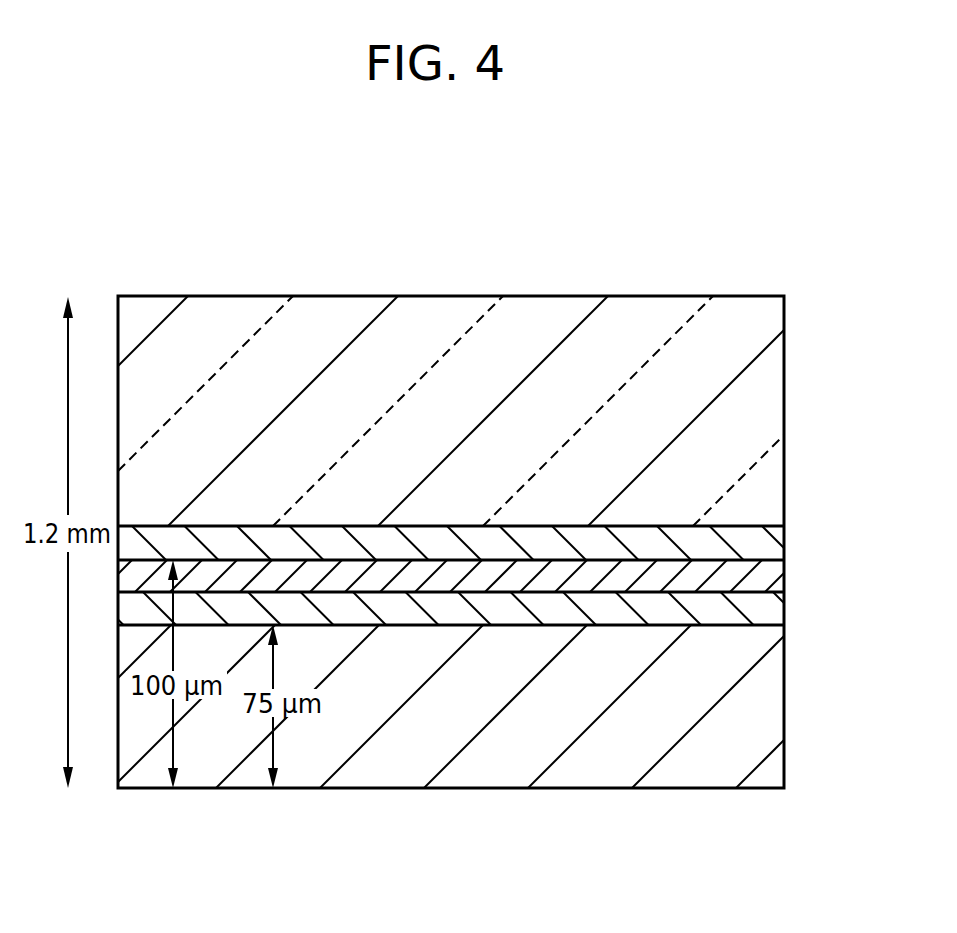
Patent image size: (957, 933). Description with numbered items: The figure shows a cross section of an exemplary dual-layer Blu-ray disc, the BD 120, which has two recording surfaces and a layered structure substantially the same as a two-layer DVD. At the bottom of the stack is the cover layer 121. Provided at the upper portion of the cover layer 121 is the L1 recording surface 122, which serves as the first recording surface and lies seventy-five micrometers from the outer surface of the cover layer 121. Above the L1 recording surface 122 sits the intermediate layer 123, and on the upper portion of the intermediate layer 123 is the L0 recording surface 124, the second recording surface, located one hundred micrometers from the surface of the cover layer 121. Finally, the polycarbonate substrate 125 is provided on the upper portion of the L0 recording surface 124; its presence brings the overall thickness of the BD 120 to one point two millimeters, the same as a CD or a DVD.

The BD 120 is at (618, 250).
The cover layer 121 is at (778, 716).
The L1 recording surface 122 is at (782, 606).
The intermediate layer 123 is at (782, 574).
The L0 recording surface 124 is at (783, 538).
The polycarbonate substrate 125 is at (778, 426).